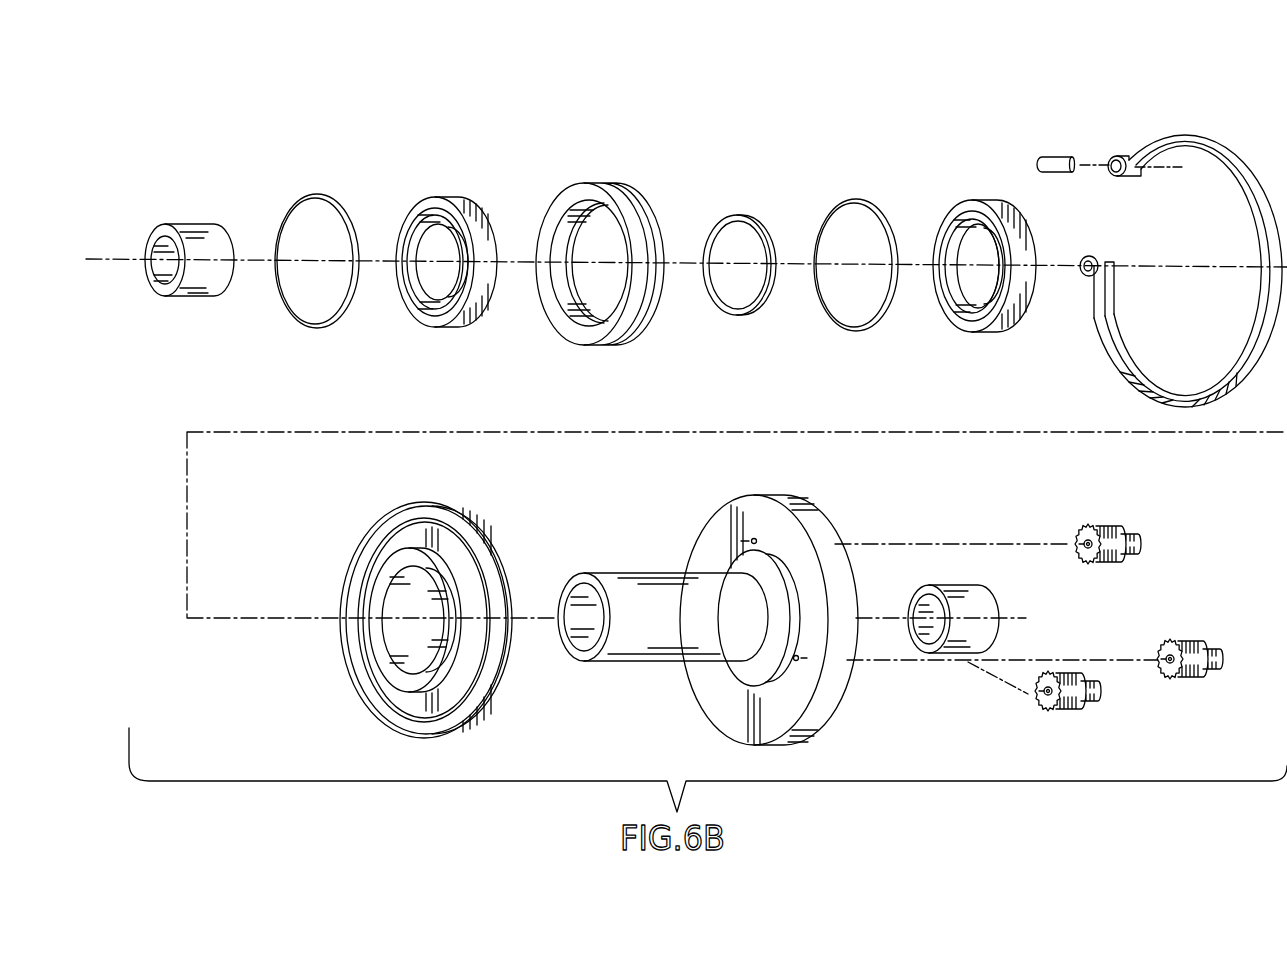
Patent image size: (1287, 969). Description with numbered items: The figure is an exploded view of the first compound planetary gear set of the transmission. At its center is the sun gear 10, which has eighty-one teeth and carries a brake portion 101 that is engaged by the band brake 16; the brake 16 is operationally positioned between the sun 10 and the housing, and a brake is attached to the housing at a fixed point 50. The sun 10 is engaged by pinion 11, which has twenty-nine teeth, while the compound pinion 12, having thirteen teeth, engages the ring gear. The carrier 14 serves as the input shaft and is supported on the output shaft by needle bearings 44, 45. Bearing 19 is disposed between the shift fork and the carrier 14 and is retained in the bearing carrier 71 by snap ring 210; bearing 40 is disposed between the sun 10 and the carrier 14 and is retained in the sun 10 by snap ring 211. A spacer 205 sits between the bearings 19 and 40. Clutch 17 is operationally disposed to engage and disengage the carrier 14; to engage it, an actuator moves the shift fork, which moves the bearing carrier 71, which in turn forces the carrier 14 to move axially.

The needle bearing 44 is at (194, 222).
The snap ring 210 is at (308, 194).
The bearing 19 is at (423, 200).
The bearing carrier 71 is at (562, 183).
The spacer 205 is at (734, 215).
The snap ring 211 is at (852, 199).
The bearing 40 is at (972, 200).
The fixed point 50 is at (1044, 156).
The brake 16 is at (1210, 137).
The sun gear 10 is at (452, 508).
The brake portion 101 is at (366, 714).
The carrier 14 is at (636, 585).
The clutch 17 is at (823, 731).
The pinion 11 is at (1035, 602).
The pinion 12 is at (1095, 675).
The needle bearing 45 is at (952, 592).